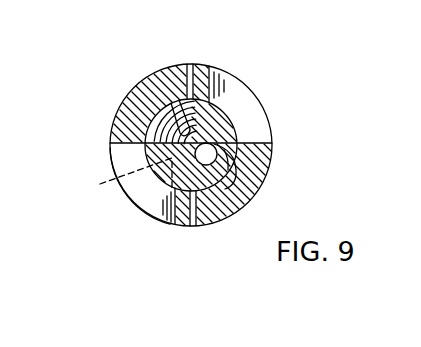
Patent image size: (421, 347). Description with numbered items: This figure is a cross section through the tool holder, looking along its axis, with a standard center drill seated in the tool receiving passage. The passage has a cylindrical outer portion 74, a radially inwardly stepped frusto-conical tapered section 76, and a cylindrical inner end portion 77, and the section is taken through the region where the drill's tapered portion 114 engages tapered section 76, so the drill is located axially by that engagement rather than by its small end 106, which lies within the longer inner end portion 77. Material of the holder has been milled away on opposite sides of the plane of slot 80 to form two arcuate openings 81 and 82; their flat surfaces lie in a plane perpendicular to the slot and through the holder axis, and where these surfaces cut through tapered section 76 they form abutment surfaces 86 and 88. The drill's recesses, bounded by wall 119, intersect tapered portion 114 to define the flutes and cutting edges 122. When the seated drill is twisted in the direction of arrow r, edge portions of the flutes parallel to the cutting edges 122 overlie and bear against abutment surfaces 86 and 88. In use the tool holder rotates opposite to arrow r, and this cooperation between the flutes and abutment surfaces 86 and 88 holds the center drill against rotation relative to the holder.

The cylindrical outer portion 74 is at (235, 212).
The frusto-conical tapered section 76 is at (122, 110).
The cylindrical inner end portion 77 is at (178, 68).
The slot 80 is at (191, 66).
The opening 82 is at (226, 90).
The wall of recess 119 is at (176, 102).
The arrow r is at (218, 107).
The cutting edge 122 is at (118, 134).
The tapered portion 114 is at (236, 128).
The abutment surface 88 is at (240, 136).
The abutment surface 86 is at (110, 145).
The end of center drill 106 is at (100, 184).
The opening 81 is at (158, 205).